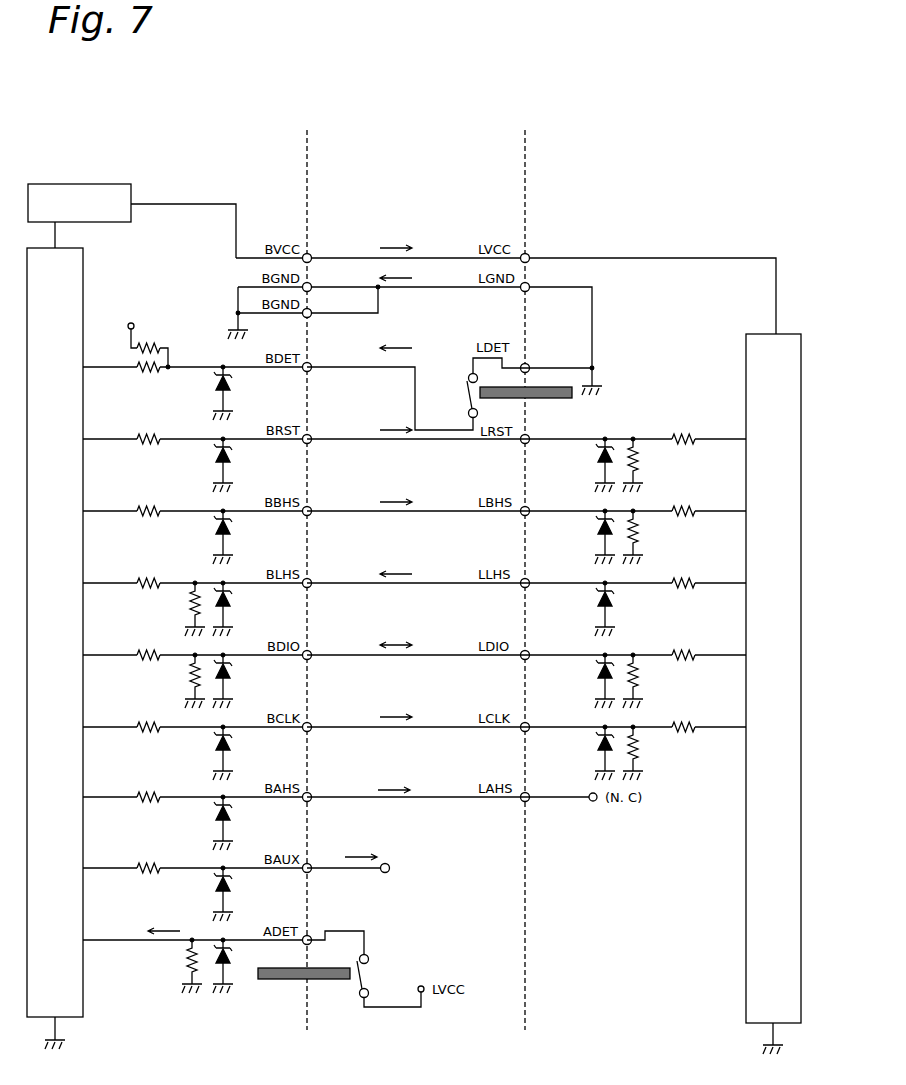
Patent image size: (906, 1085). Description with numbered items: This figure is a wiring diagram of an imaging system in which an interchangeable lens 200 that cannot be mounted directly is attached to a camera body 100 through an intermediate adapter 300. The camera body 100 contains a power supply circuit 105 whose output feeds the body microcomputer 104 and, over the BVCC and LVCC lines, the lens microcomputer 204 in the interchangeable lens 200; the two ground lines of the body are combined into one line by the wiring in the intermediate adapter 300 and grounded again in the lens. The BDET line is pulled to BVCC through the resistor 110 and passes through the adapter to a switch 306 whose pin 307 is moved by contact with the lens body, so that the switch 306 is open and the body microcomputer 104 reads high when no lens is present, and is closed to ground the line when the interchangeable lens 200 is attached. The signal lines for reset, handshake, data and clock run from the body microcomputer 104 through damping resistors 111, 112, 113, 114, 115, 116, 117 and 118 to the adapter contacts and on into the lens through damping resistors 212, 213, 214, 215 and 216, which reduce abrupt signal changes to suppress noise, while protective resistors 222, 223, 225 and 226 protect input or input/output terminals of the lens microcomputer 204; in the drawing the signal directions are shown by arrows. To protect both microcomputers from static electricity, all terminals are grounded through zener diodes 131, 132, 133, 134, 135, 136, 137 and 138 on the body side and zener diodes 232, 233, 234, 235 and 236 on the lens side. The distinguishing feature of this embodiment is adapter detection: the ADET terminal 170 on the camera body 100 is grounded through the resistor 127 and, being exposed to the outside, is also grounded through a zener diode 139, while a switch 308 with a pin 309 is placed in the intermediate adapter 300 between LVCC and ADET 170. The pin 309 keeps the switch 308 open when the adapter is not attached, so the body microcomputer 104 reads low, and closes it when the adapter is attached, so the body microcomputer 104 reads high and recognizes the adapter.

The camera body 100 is at (238, 161).
The interchangeable lens 200 is at (663, 161).
The intermediate adapter 300 is at (436, 161).
The power supply circuit 105 is at (42, 184).
The body microcomputer 104 is at (85, 293).
The lens microcomputer 204 is at (741, 350).
The resistor 110 is at (160, 343).
The resistor 111 is at (160, 372).
The resistor 112 is at (152, 433).
The resistor 113 is at (152, 505).
The resistor 114 is at (152, 577).
The resistor 115 is at (152, 649).
The resistor 116 is at (152, 721).
The resistor 117 is at (152, 791).
The resistor 118 is at (152, 862).
The resistor 127 is at (186, 960).
The zener diode 131 is at (236, 381).
The zener diode 132 is at (236, 453).
The zener diode 133 is at (236, 525).
The zener diode 134 is at (236, 597).
The zener diode 135 is at (236, 669).
The zener diode 136 is at (236, 741).
The zener diode 137 is at (236, 811).
The zener diode 138 is at (236, 882).
The zener diode 139 is at (236, 954).
The ADET 170 is at (92, 938).
The resistor 212 is at (680, 434).
The resistor 213 is at (680, 506).
The resistor 214 is at (680, 578).
The resistor 215 is at (680, 650).
The resistor 216 is at (680, 722).
The resistor 222 is at (643, 459).
The resistor 223 is at (643, 531).
The resistor 225 is at (643, 675).
The resistor 226 is at (643, 747).
The zener diode 232 is at (596, 457).
The zener diode 233 is at (596, 529).
The zener diode 234 is at (596, 601).
The zener diode 235 is at (596, 673).
The zener diode 236 is at (596, 745).
The switch 306 is at (468, 393).
The pin 307 is at (490, 399).
The switch 308 is at (370, 976).
The pin 309 is at (320, 984).